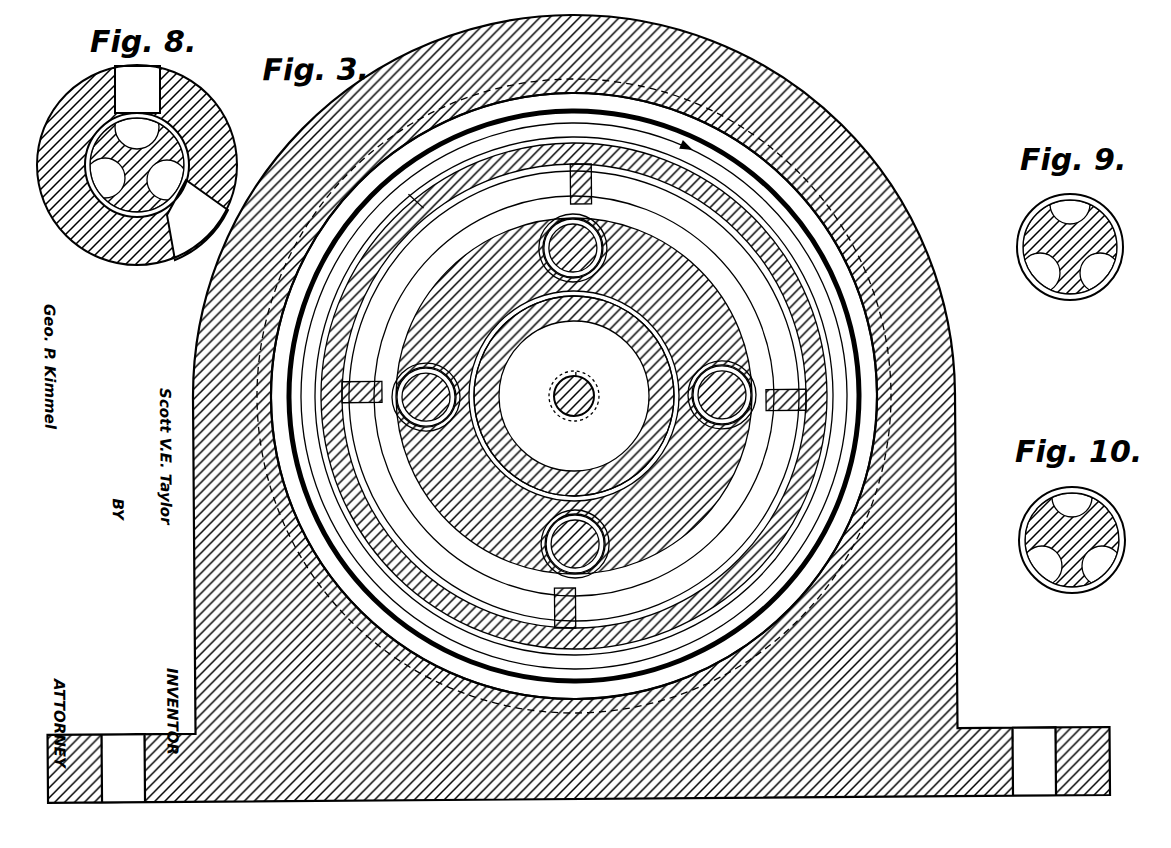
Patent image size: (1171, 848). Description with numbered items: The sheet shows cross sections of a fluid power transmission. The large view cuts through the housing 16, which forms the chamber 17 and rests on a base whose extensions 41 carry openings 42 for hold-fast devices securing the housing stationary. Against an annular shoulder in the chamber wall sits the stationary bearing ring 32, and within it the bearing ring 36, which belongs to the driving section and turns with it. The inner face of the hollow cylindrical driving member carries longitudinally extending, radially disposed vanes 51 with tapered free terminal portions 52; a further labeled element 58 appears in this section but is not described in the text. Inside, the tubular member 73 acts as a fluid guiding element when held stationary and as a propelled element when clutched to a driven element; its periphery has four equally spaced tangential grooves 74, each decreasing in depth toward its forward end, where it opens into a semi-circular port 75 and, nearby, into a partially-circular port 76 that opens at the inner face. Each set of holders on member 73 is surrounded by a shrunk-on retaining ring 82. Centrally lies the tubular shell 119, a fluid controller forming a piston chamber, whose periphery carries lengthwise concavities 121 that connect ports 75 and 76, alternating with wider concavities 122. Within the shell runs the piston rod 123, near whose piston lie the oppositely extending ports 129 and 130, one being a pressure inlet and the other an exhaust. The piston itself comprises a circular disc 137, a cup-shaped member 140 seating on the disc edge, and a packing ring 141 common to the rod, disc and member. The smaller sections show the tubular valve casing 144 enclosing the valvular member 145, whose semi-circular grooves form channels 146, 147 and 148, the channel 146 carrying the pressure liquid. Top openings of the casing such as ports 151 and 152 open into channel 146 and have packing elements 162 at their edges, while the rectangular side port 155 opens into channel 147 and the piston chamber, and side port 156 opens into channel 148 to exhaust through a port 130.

In FIG. 3, the housing 16 is at (735, 225).
In FIG. 3, the chamber 17 is at (838, 318).
In FIG. 3, the bearing ring 32 is at (370, 617).
In FIG. 3, the bearing ring 36 is at (453, 637).
In FIG. 3, the extension 41 is at (112, 735).
In FIG. 3, the opening 42 is at (120, 750).
In FIG. 3, the vane 51 is at (712, 215).
In FIG. 3, the tapered free terminal portion 52 is at (700, 228).
In FIG. 3, the race ring 58 is at (425, 207).
In FIG. 3, the tubular member 73 is at (600, 310).
In FIG. 3, the tangentially disposed groove 74 is at (536, 225).
In FIG. 3, the semi-circular port 75 is at (613, 222).
In FIG. 3, the partially-circular port 76 is at (515, 233).
In FIG. 3, the retaining ring 82 is at (362, 288).
In FIG. 3, the tubular shell 119 is at (542, 358).
In FIG. 3, the concavity 121 is at (582, 394).
In FIG. 3, the concavity 122 is at (577, 393).
In FIG. 3, the piston rod 123 is at (556, 410).
In FIG. 8, the piston rod 123 is at (65, 125).
In FIG. 8, the port 129 is at (150, 100).
In FIG. 8, the port 130 is at (205, 207).
In FIG. 3, the circular disc 137 is at (572, 447).
In FIG. 3, the cup-shaped member 140 is at (700, 285).
In FIG. 3, the packing ring 141 is at (597, 400).
In FIG. 3, the tubular valve casing 144 is at (598, 392).
In FIG. 8, the tubular valve casing 144 is at (145, 215).
In FIG. 9, the tubular valve casing 144 is at (1060, 290).
In FIG. 10, the tubular valve casing 144 is at (1035, 535).
In FIG. 3, the valvular member 145 is at (576, 380).
In FIG. 8, the valvular member 145 is at (135, 182).
In FIG. 9, the valvular member 145 is at (1095, 235).
In FIG. 10, the valvular member 145 is at (1098, 525).
In FIG. 3, the channel 146 is at (556, 392).
In FIG. 8, the channel 146 is at (150, 128).
In FIG. 9, the channel 146 is at (1068, 208).
In FIG. 10, the channel 146 is at (1058, 505).
In FIG. 3, the channel 147 is at (554, 404).
In FIG. 8, the channel 147 is at (108, 185).
In FIG. 9, the channel 147 is at (1043, 265).
In FIG. 10, the channel 147 is at (1046, 565).
In FIG. 3, the channel 148 is at (590, 410).
In FIG. 8, the channel 148 is at (168, 180).
In FIG. 9, the channel 148 is at (1100, 265).
In FIG. 10, the channel 148 is at (1098, 560).
In FIG. 8, the port 151 is at (122, 118).
In FIG. 9, the port 152 is at (1070, 202).
In FIG. 10, the rectangular port 155 is at (1040, 555).
In FIG. 8, the rectangular port 156 is at (188, 192).
In FIG. 9, the packing element 162 is at (1088, 208).